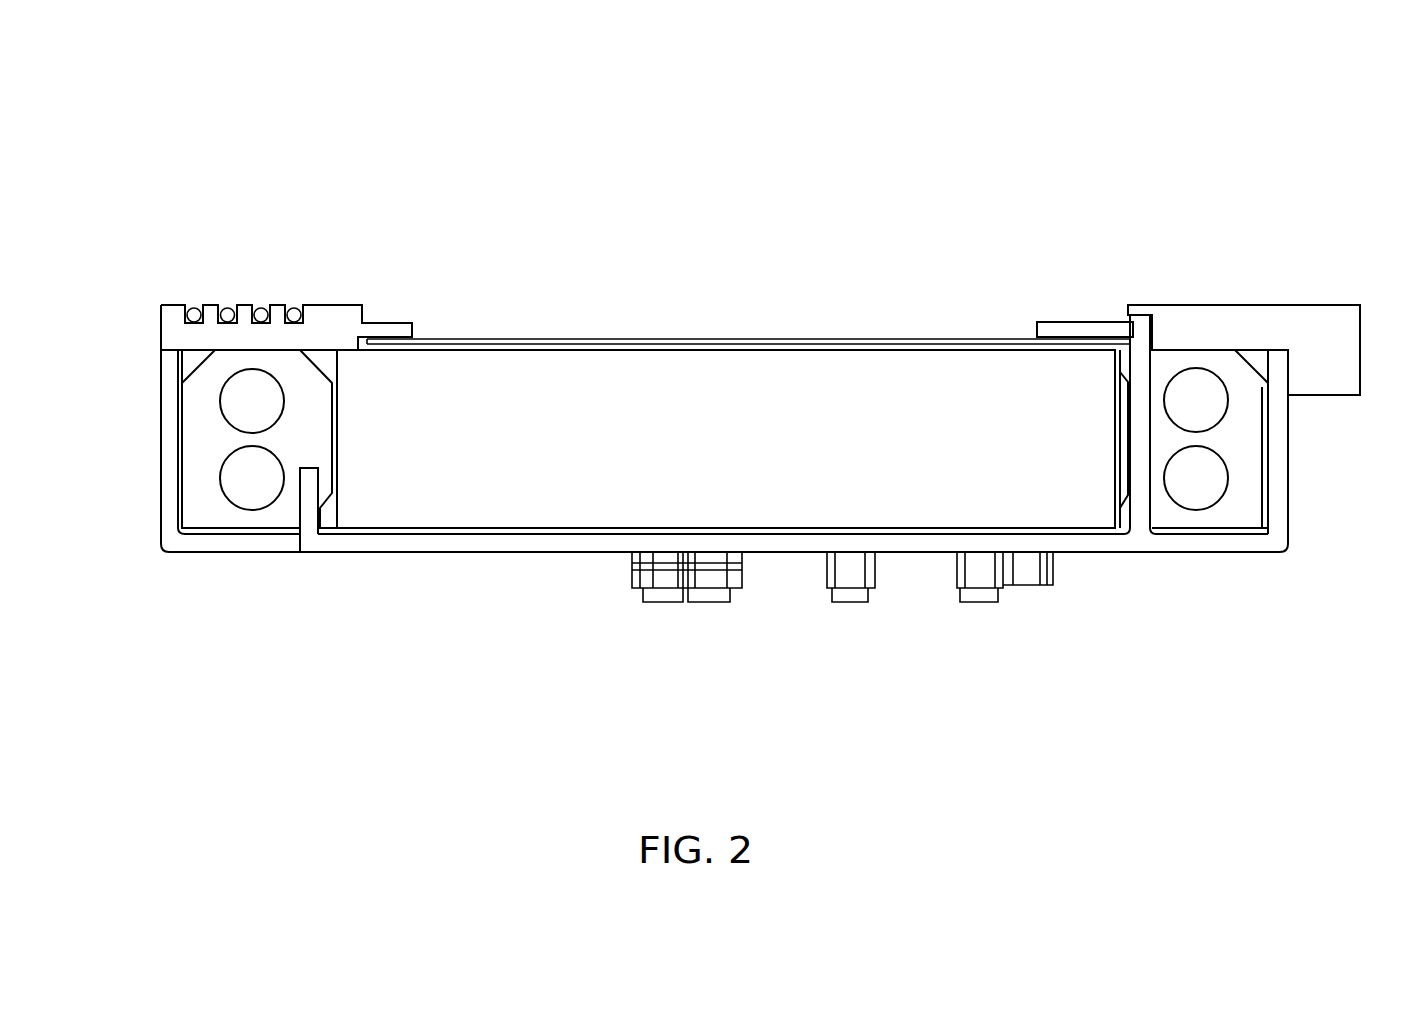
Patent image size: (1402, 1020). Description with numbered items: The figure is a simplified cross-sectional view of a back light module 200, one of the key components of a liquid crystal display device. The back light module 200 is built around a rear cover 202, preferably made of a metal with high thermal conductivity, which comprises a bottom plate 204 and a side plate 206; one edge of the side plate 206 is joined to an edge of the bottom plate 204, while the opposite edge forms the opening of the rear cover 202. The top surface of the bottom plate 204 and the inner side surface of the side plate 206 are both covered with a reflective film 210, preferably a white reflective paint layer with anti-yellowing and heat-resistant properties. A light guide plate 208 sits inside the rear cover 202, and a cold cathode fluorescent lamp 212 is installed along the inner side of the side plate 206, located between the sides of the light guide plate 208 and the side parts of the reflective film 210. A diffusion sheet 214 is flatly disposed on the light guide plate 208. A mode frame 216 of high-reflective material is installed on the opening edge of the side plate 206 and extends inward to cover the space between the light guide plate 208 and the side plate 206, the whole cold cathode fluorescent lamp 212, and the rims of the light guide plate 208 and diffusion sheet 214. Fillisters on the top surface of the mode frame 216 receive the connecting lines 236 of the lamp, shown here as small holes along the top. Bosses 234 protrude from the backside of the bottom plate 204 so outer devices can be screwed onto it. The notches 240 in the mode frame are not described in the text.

The back light module 200 is at (167, 172).
The rear cover 202 is at (345, 584).
The bottom plate 204 is at (420, 542).
The side plate 206 is at (170, 452).
The light guide plate 208 is at (667, 365).
The reflective film 210 is at (180, 495).
The cold cathode fluorescent lamp 212 is at (242, 395).
The diffusion sheet 214 is at (518, 342).
The mode frame 216 is at (328, 313).
The bosses 234 is at (662, 598).
The connecting lines 236 is at (261, 313).
The notches 240 is at (226, 287).